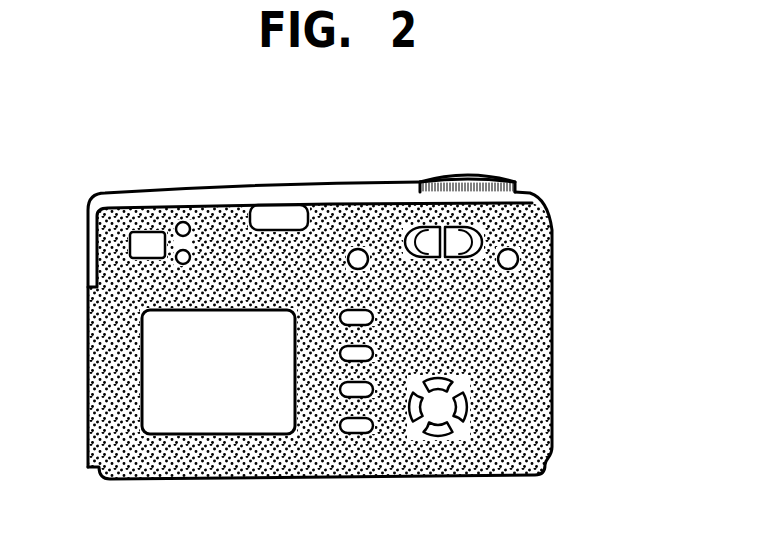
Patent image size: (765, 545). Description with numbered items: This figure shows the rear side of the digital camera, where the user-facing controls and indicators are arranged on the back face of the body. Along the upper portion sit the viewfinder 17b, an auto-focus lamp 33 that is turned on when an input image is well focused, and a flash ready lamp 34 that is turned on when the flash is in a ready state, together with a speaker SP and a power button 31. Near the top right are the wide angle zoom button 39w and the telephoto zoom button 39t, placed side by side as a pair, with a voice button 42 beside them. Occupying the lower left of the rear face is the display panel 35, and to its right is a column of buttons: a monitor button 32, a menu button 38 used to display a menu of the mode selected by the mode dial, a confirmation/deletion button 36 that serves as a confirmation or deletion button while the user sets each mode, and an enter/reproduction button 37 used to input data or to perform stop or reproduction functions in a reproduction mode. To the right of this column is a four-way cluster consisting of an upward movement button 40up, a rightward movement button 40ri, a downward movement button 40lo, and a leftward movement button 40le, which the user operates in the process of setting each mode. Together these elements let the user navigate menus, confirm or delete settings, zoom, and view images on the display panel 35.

The viewfinder 17b is at (147, 238).
The auto-focus lamp 33 is at (183, 222).
The flash ready lamp 34 is at (177, 261).
The speaker SP is at (278, 212).
The power button 31 is at (358, 249).
The wide angle zoom button 39w is at (420, 240).
The telephoto zoom button 39t is at (462, 238).
The voice button 42 is at (519, 258).
The monitor button 32 is at (374, 318).
The menu button 38 is at (374, 353).
The confirmation/deletion button 36 is at (340, 397).
The enter/reproduction button 37 is at (357, 433).
The display panel 35 is at (218, 420).
The upward movement button 40up is at (440, 385).
The rightward movement button 40ri is at (466, 404).
The downward movement button 40lo is at (439, 437).
The leftward movement button 40le is at (410, 421).